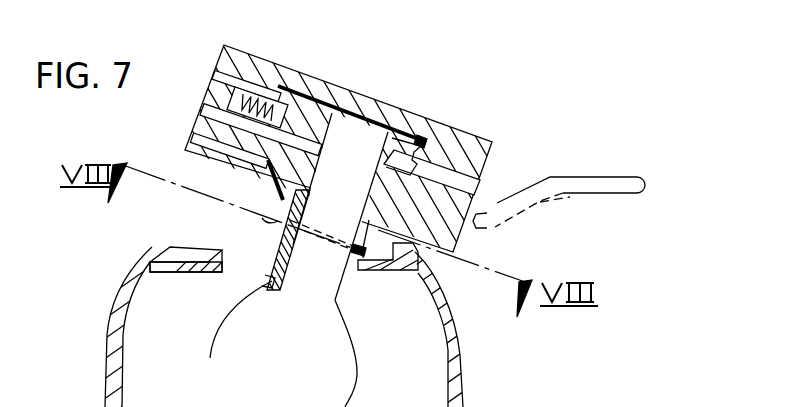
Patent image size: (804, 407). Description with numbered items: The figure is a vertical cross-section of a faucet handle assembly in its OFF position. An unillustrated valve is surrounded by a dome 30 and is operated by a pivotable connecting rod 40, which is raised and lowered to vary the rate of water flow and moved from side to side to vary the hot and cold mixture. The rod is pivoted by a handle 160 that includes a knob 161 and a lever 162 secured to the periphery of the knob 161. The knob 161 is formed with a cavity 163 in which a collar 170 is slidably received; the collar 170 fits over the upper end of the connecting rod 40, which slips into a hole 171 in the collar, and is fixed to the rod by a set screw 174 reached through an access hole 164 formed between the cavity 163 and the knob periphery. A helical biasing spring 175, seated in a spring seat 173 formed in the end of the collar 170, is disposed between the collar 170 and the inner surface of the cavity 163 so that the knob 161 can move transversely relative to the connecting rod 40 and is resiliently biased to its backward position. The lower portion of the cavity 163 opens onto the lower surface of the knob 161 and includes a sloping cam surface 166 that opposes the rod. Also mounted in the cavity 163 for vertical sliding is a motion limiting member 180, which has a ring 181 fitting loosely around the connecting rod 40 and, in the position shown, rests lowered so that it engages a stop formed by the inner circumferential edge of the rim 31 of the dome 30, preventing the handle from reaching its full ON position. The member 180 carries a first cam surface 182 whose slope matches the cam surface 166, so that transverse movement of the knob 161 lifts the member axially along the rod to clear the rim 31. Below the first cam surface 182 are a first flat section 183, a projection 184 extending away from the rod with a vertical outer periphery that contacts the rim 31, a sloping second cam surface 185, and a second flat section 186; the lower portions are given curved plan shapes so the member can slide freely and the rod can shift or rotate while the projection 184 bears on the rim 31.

The dome 30 is at (468, 371).
The rim 31 is at (165, 247).
The connecting rod 40 is at (343, 293).
The handle 160 is at (400, 41).
The knob 161 is at (452, 128).
The lever 162 is at (608, 174).
The cavity 163 is at (208, 110).
The access hole 164 is at (462, 183).
The cam surface 166 is at (210, 164).
The collar 170 is at (333, 90).
The hole 171 is at (420, 135).
The spring seat 173 is at (284, 82).
The set screw 174 is at (428, 152).
The helical biasing spring 175 is at (236, 90).
The motion limiting member 180 is at (195, 234).
The ring 181 is at (330, 238).
The first cam surface 182 is at (276, 191).
The first flat section 183 is at (262, 218).
The projection 184 is at (220, 254).
The second cam surface 185 is at (270, 263).
The second flat section 186 is at (268, 293).